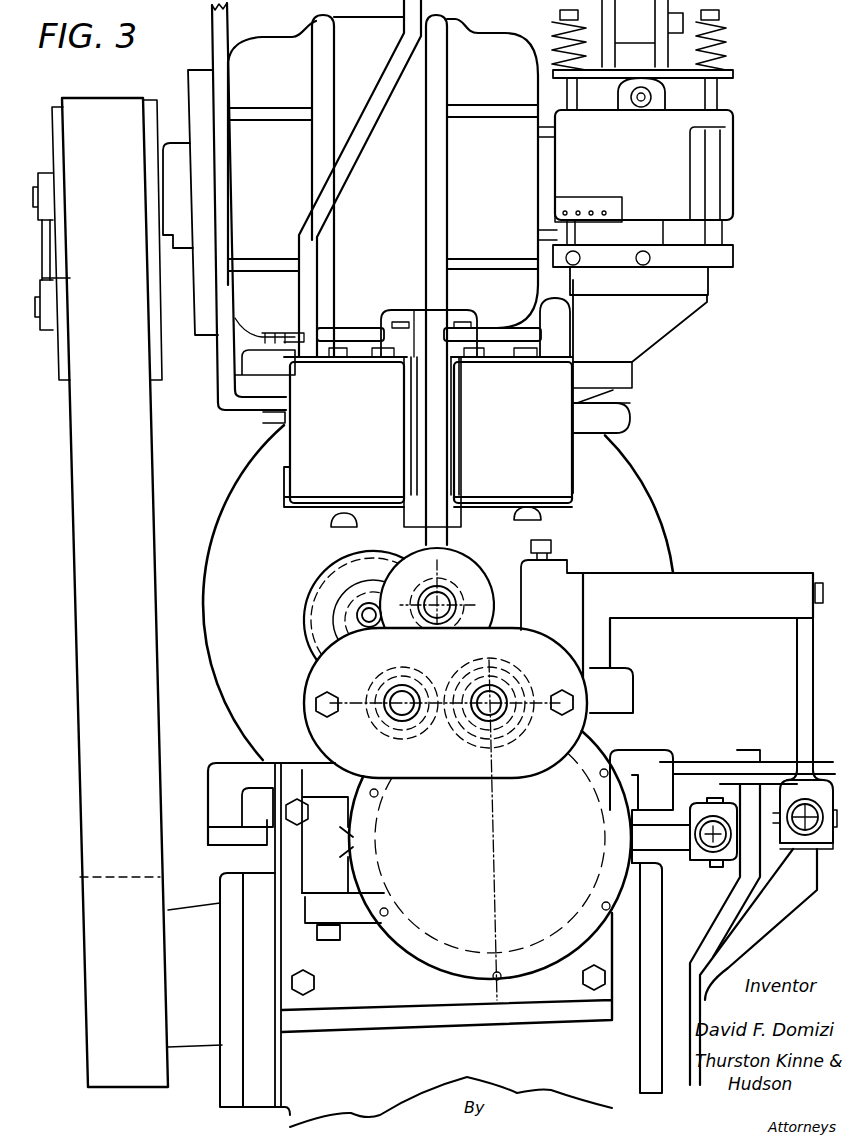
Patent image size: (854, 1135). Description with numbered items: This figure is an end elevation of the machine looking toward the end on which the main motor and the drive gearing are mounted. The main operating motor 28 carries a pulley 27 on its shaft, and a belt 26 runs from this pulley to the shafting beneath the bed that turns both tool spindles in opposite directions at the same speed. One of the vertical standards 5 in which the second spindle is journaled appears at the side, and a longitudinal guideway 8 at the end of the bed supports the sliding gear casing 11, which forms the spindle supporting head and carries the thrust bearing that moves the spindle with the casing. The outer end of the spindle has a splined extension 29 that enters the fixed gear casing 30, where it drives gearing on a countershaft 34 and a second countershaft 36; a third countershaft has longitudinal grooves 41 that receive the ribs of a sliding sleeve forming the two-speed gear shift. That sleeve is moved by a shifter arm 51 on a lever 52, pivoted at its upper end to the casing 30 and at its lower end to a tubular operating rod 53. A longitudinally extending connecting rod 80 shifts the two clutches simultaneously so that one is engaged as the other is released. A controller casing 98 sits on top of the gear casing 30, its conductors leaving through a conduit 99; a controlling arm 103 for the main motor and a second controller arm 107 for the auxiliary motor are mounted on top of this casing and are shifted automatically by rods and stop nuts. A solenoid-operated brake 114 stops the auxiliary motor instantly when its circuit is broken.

The vertical standard 5 is at (455, 526).
The guideway 8 is at (253, 810).
The gear casing 11 is at (627, 525).
The belt 26 is at (170, 722).
The pulley 27 is at (146, 103).
The main operating motor 28 is at (505, 36).
The splined extension 29 is at (450, 606).
The fixed gear casing 30 is at (481, 573).
The countershaft 34 is at (365, 616).
The second countershaft 36 is at (385, 695).
The longitudinal grooves 41 is at (497, 693).
The shifter arm 51 is at (618, 685).
The lever 52 is at (767, 612).
The tubular operating rod 53 is at (800, 827).
The connecting rod 80 is at (712, 832).
The controller casing 98 is at (290, 500).
The conduit 99 is at (310, 225).
The controlling arm 103 is at (496, 340).
The second controller arm 107 is at (374, 340).
The brake 114 is at (672, 178).